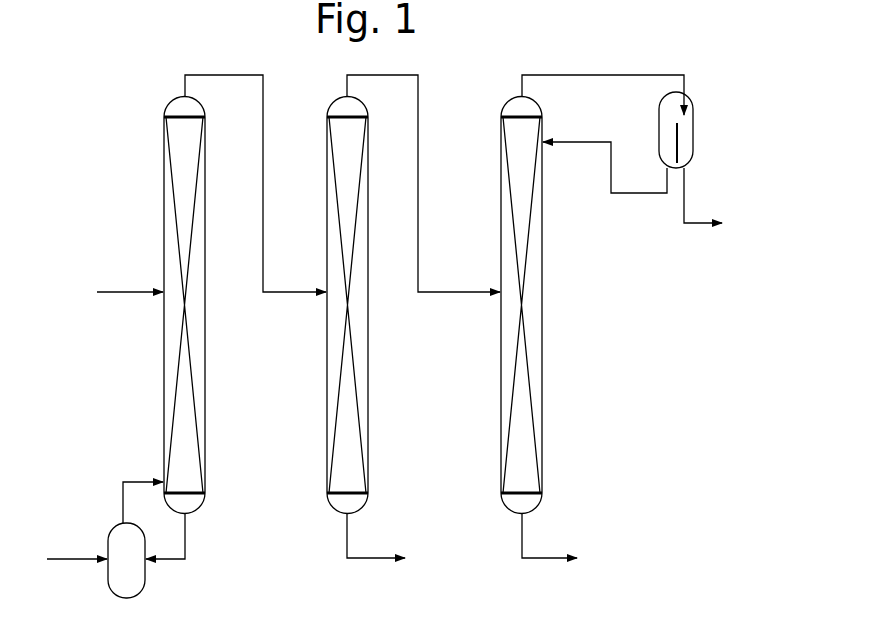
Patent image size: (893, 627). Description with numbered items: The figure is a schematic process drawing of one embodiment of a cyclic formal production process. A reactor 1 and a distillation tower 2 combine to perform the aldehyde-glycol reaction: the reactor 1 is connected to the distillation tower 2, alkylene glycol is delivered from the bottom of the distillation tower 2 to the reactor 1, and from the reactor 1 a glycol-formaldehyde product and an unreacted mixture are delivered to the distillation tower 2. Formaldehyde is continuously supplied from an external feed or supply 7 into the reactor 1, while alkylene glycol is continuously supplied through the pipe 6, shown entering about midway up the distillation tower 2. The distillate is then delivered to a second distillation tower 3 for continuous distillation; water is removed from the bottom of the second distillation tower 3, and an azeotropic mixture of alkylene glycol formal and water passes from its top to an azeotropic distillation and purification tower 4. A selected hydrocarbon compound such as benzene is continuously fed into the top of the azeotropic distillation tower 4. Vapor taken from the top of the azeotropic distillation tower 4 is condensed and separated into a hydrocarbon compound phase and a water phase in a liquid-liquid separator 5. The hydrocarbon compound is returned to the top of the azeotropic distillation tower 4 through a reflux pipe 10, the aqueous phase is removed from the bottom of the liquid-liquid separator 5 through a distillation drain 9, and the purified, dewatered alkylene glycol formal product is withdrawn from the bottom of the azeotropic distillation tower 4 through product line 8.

The reactor 1 is at (145, 568).
The distillation tower 2 is at (205, 440).
The second distillation tower 3 is at (368, 435).
The azeotropic distillation and purification tower 4 is at (542, 437).
The liquid-liquid separator 5 is at (693, 128).
The alkylene glycol supply pipe 6 is at (129, 278).
The external feed or supply 7 is at (77, 545).
The product line 8 is at (553, 536).
The distillation drain 9 is at (709, 195).
The reflux pipe 10 is at (605, 167).